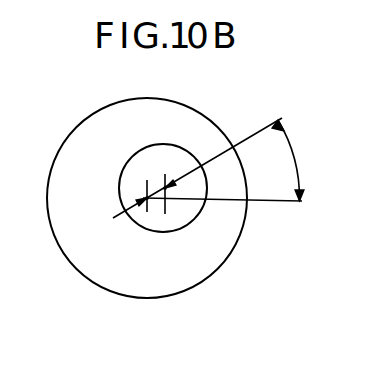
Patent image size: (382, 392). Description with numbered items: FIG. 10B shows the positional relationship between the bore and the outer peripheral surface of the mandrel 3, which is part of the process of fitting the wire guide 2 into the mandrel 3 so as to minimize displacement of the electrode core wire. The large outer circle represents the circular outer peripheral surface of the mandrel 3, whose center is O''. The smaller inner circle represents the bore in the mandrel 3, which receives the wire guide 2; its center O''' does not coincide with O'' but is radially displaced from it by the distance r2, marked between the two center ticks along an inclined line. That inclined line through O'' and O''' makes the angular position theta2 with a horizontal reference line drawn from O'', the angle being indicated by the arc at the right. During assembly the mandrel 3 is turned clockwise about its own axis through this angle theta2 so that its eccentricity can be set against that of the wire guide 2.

The mandrel 3 is at (80, 123).
The wire guide 2 is at (183, 218).
The radial displacement r2 is at (148, 181).
The angular position theta2 is at (221, 168).
The center of the circular outer peripheral surface of the mandrel O'' is at (151, 235).
The center of the bore in the mandrel O''' is at (178, 151).